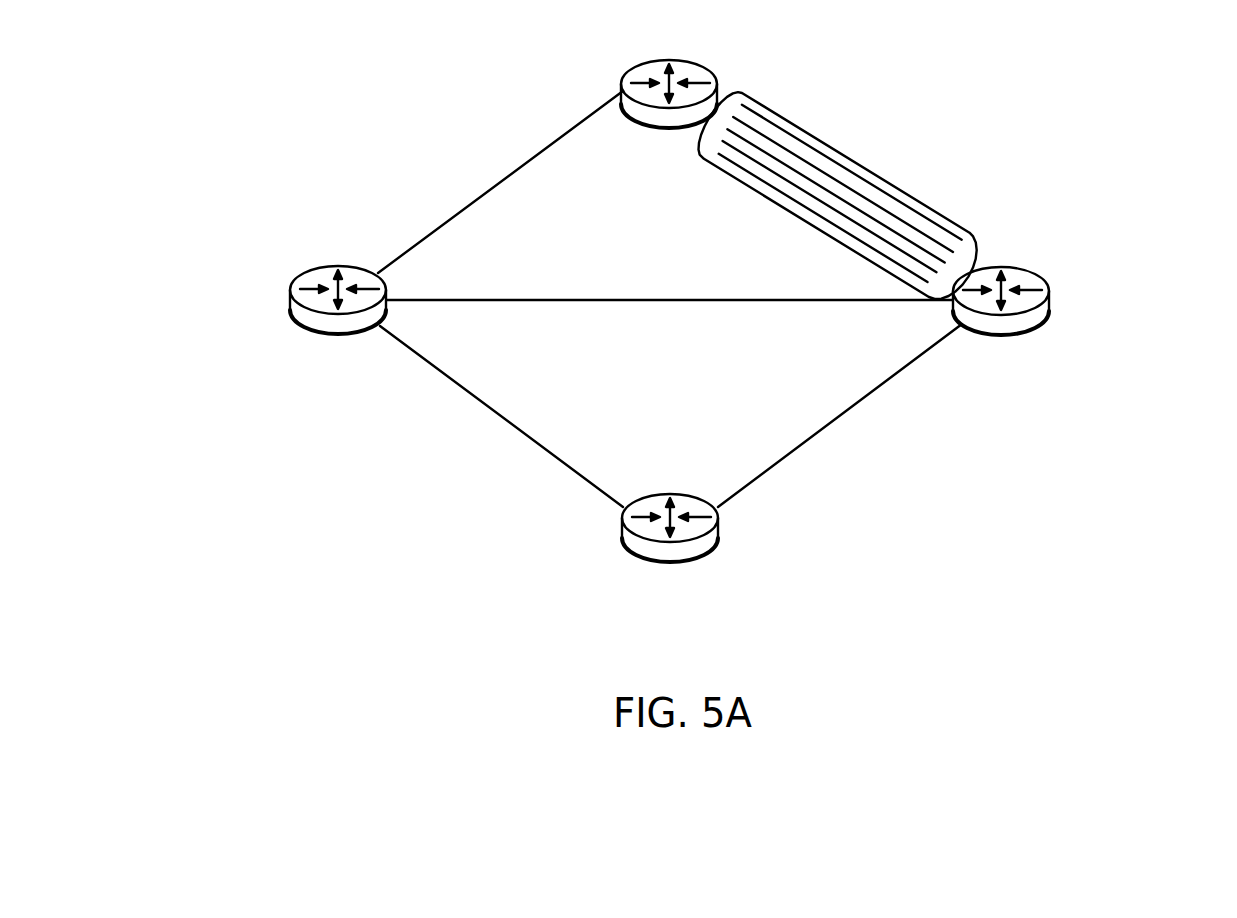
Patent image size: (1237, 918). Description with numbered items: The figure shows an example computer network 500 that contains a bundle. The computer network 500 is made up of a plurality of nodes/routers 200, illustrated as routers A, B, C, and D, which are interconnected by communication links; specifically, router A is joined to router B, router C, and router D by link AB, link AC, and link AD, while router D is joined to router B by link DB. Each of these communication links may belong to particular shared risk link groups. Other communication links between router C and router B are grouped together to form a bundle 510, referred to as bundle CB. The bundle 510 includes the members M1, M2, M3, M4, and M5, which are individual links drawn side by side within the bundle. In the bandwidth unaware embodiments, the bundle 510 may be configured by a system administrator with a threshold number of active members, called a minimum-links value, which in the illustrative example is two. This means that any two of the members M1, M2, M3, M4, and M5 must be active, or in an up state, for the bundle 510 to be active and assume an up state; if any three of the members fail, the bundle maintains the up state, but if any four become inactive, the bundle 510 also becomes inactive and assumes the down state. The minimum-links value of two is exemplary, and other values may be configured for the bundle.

The computer network 500 is at (413, 88).
The bundle 510 is at (842, 185).
The node/router 200 is at (1010, 256).
The member M1 is at (760, 104).
The member M2 is at (806, 153).
The member M3 is at (844, 192).
The member M4 is at (722, 147).
The member M5 is at (829, 231).
The router A is at (310, 269).
The router B is at (1081, 299).
The router C is at (645, 62).
The router D is at (702, 562).